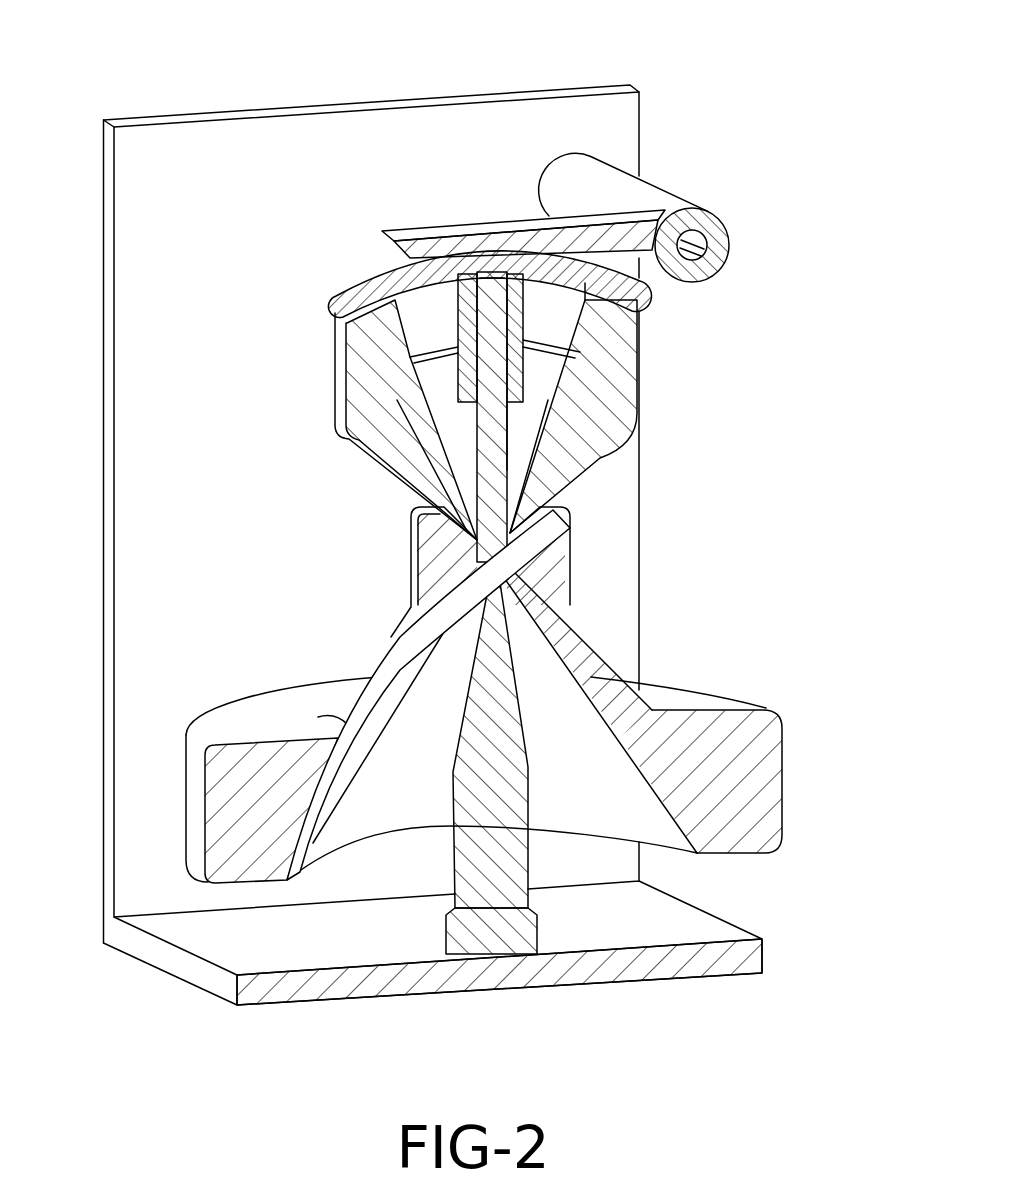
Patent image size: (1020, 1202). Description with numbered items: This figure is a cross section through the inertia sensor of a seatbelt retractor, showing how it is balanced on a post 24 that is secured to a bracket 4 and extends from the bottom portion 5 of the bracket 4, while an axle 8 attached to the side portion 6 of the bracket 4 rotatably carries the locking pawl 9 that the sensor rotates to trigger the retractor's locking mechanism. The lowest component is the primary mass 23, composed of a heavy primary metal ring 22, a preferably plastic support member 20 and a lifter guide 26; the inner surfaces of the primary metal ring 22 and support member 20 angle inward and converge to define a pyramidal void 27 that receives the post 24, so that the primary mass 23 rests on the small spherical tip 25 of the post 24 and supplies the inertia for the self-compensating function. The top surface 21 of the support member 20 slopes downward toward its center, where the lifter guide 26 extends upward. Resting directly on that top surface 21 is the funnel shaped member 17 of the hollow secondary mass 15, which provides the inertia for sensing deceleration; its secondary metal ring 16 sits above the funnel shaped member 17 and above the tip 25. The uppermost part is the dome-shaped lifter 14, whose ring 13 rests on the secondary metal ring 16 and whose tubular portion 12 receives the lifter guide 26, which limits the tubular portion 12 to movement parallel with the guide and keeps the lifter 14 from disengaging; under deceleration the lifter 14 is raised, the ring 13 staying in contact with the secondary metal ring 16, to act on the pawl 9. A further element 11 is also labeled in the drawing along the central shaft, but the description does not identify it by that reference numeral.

The bracket 4 is at (184, 110).
The bottom portion of the bracket 5 is at (190, 938).
The side portion of the bracket 6 is at (155, 514).
The axle 8 is at (587, 187).
The locking pawl 9 is at (437, 243).
The shaft 11 is at (487, 270).
The tubular portion 12 is at (523, 363).
The ring 13 is at (590, 314).
The lifter 14 is at (360, 285).
The secondary mass 15 is at (444, 386).
The secondary metal ring 16 is at (373, 383).
The funnel shaped member 17 is at (432, 490).
The support member 20 is at (437, 567).
The top surface 21 is at (537, 508).
The primary metal ring 22 is at (745, 790).
The primary mass 23 is at (535, 776).
The post 24 is at (512, 836).
The tip 25 is at (495, 562).
The lifter guide 26 is at (497, 447).
The pyramidal void 27 is at (405, 800).